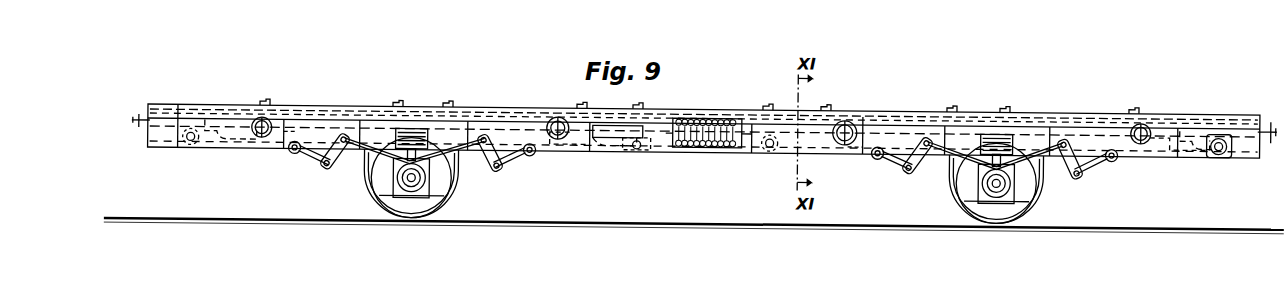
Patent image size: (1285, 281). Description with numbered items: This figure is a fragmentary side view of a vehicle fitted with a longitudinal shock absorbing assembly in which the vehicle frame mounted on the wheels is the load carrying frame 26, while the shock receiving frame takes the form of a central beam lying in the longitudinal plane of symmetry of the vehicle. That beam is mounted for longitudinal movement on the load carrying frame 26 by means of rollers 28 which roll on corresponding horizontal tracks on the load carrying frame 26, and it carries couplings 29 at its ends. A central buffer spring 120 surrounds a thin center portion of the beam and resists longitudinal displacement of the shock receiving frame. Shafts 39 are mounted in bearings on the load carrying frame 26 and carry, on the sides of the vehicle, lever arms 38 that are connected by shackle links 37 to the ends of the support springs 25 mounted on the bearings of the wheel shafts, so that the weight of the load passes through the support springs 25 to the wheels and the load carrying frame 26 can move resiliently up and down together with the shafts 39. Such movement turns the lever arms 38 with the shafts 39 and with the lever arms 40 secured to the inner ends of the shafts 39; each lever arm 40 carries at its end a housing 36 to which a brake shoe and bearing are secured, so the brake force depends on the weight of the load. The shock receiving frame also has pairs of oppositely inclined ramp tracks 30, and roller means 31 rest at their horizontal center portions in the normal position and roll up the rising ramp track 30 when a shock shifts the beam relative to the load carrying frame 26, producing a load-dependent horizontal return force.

The support springs 25 is at (448, 139).
The load carrying frame 26 is at (934, 108).
The rollers 28 is at (191, 142).
The couplings 29 is at (150, 112).
The ramp tracks 30 is at (228, 138).
The roller means 31 is at (568, 137).
The housing 36 is at (258, 117).
The shackle links 37 is at (337, 163).
The lever arms 38 is at (322, 153).
The shafts 39 is at (291, 149).
The lever arms 40 is at (284, 136).
The central buffer spring 120 is at (706, 142).